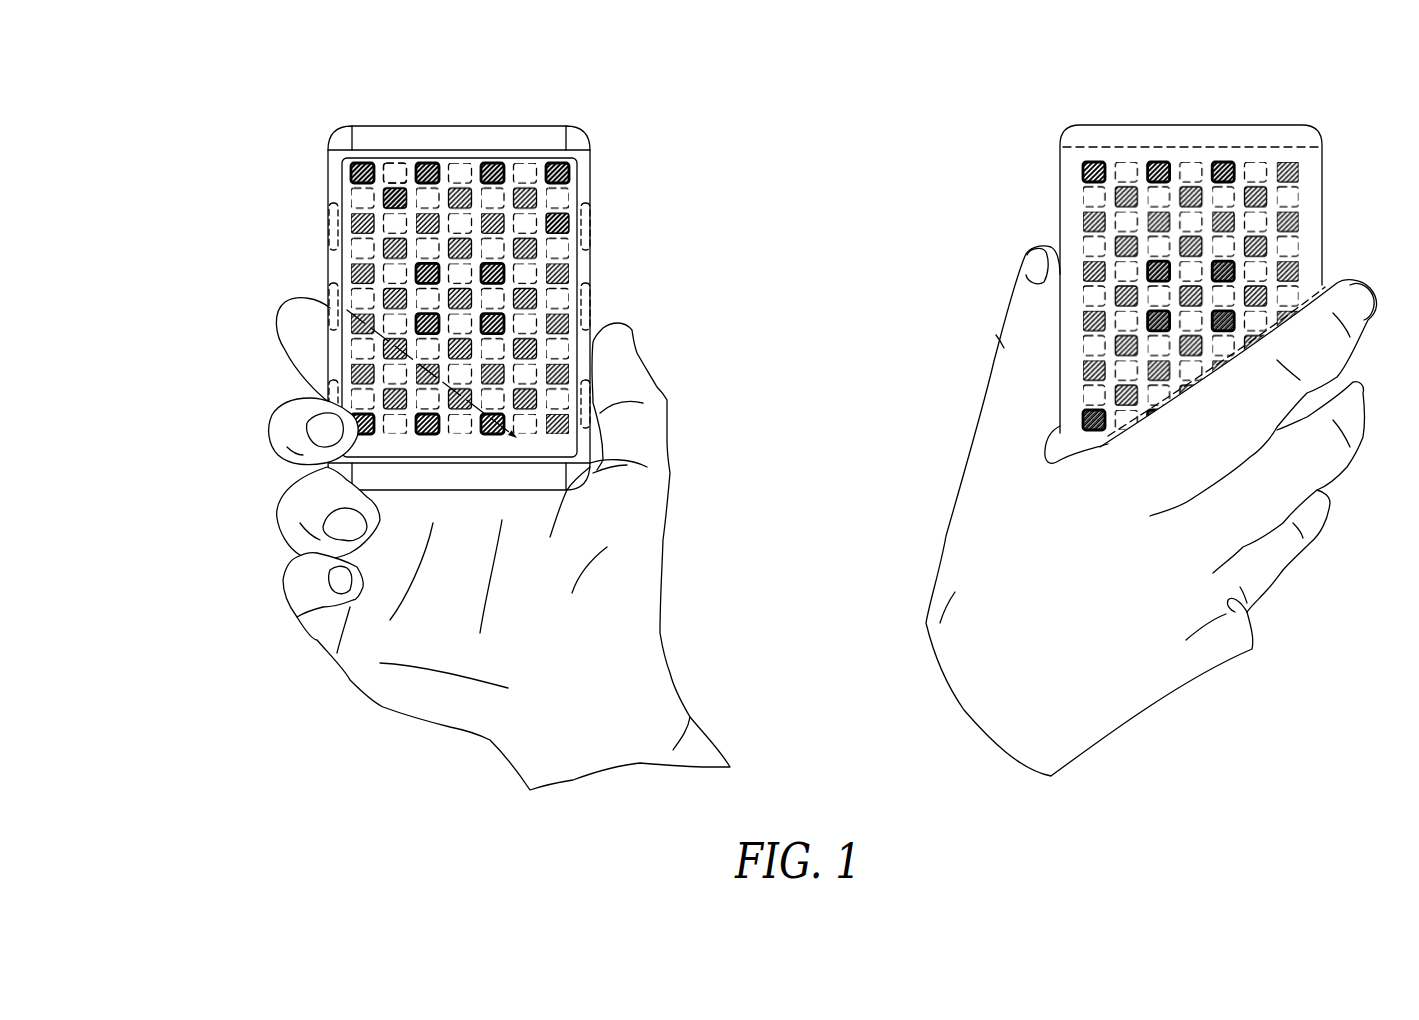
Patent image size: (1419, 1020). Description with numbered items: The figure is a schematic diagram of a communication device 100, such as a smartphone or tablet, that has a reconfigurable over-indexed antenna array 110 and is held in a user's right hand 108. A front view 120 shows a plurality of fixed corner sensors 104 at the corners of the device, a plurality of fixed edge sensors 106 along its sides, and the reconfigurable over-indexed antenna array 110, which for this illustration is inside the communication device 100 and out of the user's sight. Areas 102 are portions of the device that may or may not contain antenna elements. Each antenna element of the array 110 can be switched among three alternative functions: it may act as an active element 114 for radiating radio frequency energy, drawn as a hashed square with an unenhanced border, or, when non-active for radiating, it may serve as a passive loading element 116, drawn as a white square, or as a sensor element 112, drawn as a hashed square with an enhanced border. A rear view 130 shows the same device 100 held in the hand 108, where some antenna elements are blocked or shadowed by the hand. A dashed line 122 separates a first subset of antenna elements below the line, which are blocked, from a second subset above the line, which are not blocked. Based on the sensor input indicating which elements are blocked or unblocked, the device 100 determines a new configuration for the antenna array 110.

The communication device 100 is at (741, 343).
The areas 102 is at (557, 135).
The fixed corner sensors 104 is at (588, 143).
The fixed edge sensors 106 is at (587, 246).
The user's right hand 108 is at (655, 636).
The reconfigurable over-indexed antenna array 110 is at (560, 212).
The sensor element 112 is at (565, 172).
The active element 114 is at (405, 200).
The passive loading element 116 is at (397, 173).
The front view 120 is at (727, 105).
The dashed line 122 is at (447, 380).
The rear view 130 is at (1003, 113).